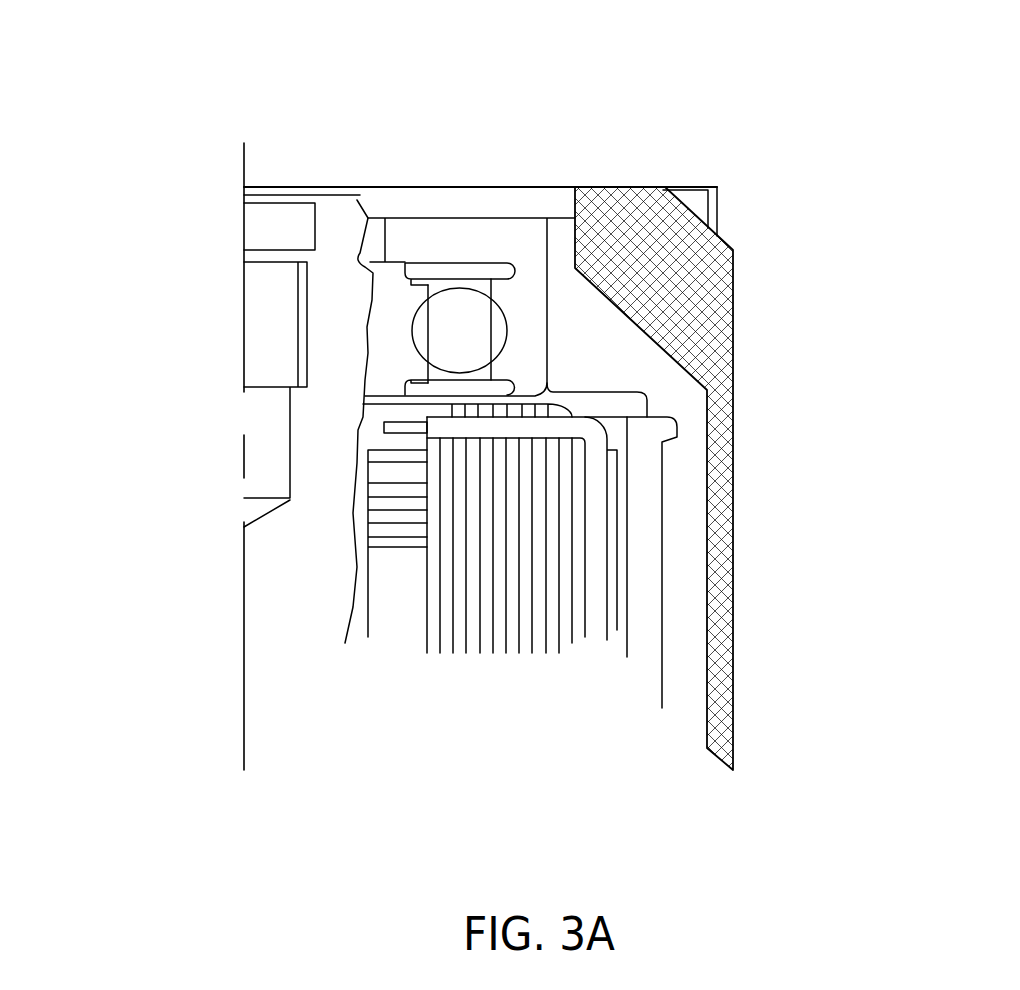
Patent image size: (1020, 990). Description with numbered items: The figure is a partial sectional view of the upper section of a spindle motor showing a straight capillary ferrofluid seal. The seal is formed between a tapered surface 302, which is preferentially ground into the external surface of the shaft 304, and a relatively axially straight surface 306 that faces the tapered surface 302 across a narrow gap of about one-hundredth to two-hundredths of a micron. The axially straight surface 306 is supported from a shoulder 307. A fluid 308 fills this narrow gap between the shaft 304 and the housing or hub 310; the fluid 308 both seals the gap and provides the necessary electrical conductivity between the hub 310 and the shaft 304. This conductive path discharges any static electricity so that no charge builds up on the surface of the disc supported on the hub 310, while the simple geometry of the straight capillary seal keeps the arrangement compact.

The tapered surface 302 is at (347, 240).
The shaft 304 is at (300, 585).
The axially straight surface 306 is at (388, 242).
The shoulder 307 is at (488, 237).
The fluid 308 is at (375, 240).
The housing or hub 310 is at (558, 202).